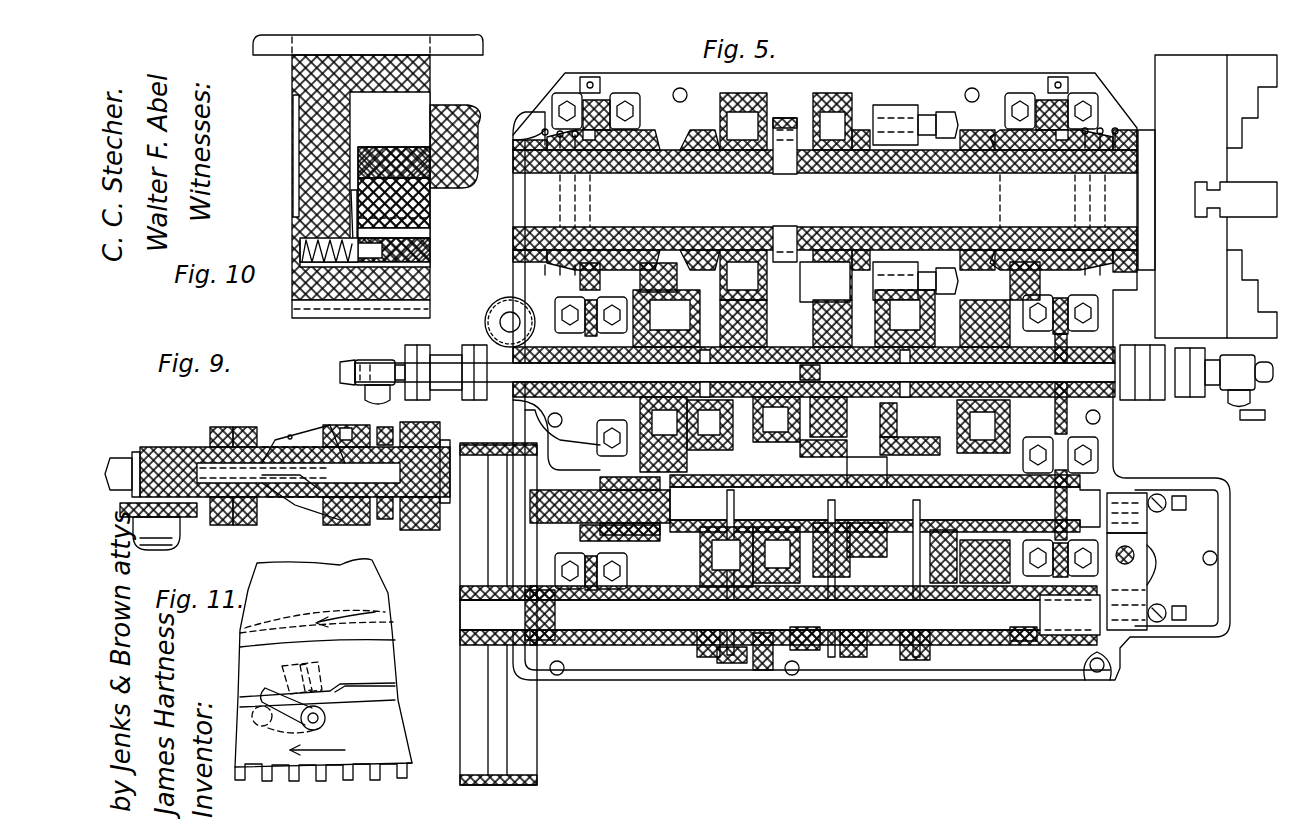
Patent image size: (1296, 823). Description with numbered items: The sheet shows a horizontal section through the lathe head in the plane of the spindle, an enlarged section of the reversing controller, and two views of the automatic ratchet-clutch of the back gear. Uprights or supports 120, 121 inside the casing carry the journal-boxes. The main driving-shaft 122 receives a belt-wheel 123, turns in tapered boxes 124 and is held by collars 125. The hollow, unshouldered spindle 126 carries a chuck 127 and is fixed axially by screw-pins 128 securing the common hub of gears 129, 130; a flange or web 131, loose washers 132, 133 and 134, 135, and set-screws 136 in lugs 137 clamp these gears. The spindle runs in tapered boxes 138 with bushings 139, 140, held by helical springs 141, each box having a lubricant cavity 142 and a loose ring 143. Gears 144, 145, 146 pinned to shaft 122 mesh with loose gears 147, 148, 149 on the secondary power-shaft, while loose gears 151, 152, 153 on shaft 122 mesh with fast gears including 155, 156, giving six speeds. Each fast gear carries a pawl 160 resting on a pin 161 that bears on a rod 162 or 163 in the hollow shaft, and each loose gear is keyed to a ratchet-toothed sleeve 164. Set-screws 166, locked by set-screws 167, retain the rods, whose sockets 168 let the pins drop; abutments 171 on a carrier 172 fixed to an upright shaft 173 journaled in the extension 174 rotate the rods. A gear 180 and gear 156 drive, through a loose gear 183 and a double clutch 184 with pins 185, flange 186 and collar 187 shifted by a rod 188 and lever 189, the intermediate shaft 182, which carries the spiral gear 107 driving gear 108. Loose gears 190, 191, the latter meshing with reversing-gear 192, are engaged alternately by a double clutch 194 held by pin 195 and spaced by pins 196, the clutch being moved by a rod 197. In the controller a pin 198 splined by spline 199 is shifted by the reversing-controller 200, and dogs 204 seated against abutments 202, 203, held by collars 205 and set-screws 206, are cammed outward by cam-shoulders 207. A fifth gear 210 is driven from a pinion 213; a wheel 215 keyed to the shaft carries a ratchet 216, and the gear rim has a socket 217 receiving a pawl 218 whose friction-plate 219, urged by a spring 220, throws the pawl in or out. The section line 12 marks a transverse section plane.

In FIG. 5, the section line 12 is at (920, 483).
In FIG. 5, the spiral gear 107 is at (492, 398).
In FIG. 5, the gear 108 is at (484, 320).
In FIG. 5, the upright or support 120 is at (588, 682).
In FIG. 5, the upright or support 121 is at (1070, 675).
In FIG. 5, the main driving-shaft 122 is at (470, 615).
In FIG. 5, the belt-wheel 123 is at (470, 735).
In FIG. 5, the boxes 124 is at (612, 645).
In FIG. 5, the collars 125 is at (838, 652).
In FIG. 5, the spindle 126 is at (898, 210).
In FIG. 5, the chuck 127 is at (1207, 196).
In FIG. 5, the screw-pins 128 is at (790, 160).
In FIG. 5, the gear 129 is at (770, 90).
In FIG. 5, the gear 130 is at (850, 90).
In FIG. 5, the flange or web 131 is at (688, 158).
In FIG. 5, the loose washer 132 is at (700, 158).
In FIG. 5, the loose washer 133 is at (705, 170).
In FIG. 5, the loose washer 134 is at (860, 160).
In FIG. 5, the loose washer 135 is at (880, 183).
In FIG. 5, the set-screws 136 is at (941, 200).
In FIG. 5, the ears or lugs 137 is at (880, 125).
In FIG. 5, the boxes 138 is at (600, 133).
In FIG. 5, the bushing 139 is at (635, 140).
In FIG. 5, the bushing 140 is at (512, 135).
In FIG. 5, the helical springs 141 is at (545, 128).
In FIG. 5, the cavity 142 is at (598, 98).
In FIG. 5, the loose ring 143 is at (605, 128).
In FIG. 5, the gear 144 is at (710, 660).
In FIG. 5, the gear 145 is at (805, 665).
In FIG. 5, the gear 146 is at (940, 647).
In FIG. 5, the gear 147 is at (701, 557).
In FIG. 5, the gear 148 is at (824, 446).
In FIG. 5, the gear 149 is at (900, 554).
In FIG. 5, the gear 151 is at (765, 670).
In FIG. 5, the gear 152 is at (855, 660).
In FIG. 5, the gear 153 is at (880, 660).
In FIG. 5, the gear 155 is at (820, 553).
In FIG. 5, the gear 156 is at (958, 560).
In FIG. 5, the loose pawl 160 is at (800, 481).
In FIG. 5, the pin 161 is at (802, 573).
In FIG. 5, the rod 162 is at (1003, 635).
In FIG. 5, the rod 163 is at (1125, 490).
In FIG. 5, the sleeve or bushing 164 is at (735, 718).
In FIG. 5, the set-screws 166 is at (1200, 655).
In FIG. 5, the set-screws 167 is at (1165, 495).
In FIG. 5, the recesses or sockets 168 is at (780, 570).
In FIG. 5, the abutment 171 is at (1150, 505).
In FIG. 5, the carrier 172 is at (1150, 578).
In FIG. 5, the upright shaft 173 is at (1135, 555).
In FIG. 5, the extension 174 is at (1232, 590).
In FIG. 5, the gear 180 is at (985, 561).
In FIG. 10, the intermediate shaft 182 is at (270, 58).
In FIG. 9, the intermediate shaft 182 is at (400, 546).
In FIG. 5, the intermediate shaft 182 is at (541, 435).
In FIG. 5, the loose gear 183 is at (910, 314).
In FIG. 5, the double clutch 184 is at (945, 315).
In FIG. 5, the pins 185 is at (880, 370).
In FIG. 5, the flange 186 is at (825, 370).
In FIG. 5, the collar 187 is at (1003, 304).
In FIG. 5, the rod 188 is at (1080, 365).
In FIG. 5, the lever 189 is at (1196, 390).
In FIG. 5, the gear 190 is at (676, 318).
In FIG. 5, the gear 191 is at (810, 282).
In FIG. 5, the reversing-gear 192 is at (735, 372).
In FIG. 5, the double clutch 194 is at (790, 302).
In FIG. 5, the pin 195 is at (745, 365).
In FIG. 5, the pins 196 is at (705, 365).
In FIG. 9, the rod 197 is at (438, 528).
In FIG. 5, the rod 197 is at (428, 546).
In FIG. 9, the pin 198 is at (190, 450).
In FIG. 9, the spline 199 is at (205, 500).
In FIG. 9, the reversing-controller 200 is at (130, 540).
In FIG. 5, the reversing-controller 200 is at (360, 360).
In FIG. 9, the abutment 202 is at (296, 451).
In FIG. 9, the abutment 203 is at (343, 465).
In FIG. 9, the dogs 204 is at (312, 438).
In FIG. 9, the collars 205 is at (221, 428).
In FIG. 9, the set-screws 206 is at (245, 428).
In FIG. 9, the cam-shoulders 207 is at (280, 500).
In FIG. 10, the gear 210 is at (305, 170).
In FIG. 11, the gear 210 is at (380, 702).
In FIG. 5, the gear 210 is at (628, 277).
In FIG. 5, the pinion 213 is at (620, 537).
In FIG. 10, the wheel 215 is at (440, 125).
In FIG. 11, the wheel 215 is at (323, 663).
In FIG. 5, the wheel 215 is at (677, 434).
In FIG. 10, the ratchet 216 is at (430, 208).
In FIG. 11, the ratchet 216 is at (390, 680).
In FIG. 5, the ratchet 216 is at (706, 427).
In FIG. 11, the socket 217 is at (328, 726).
In FIG. 10, the pawl 218 is at (430, 250).
In FIG. 11, the pawl 218 is at (323, 760).
In FIG. 10, the friction-plate 219 is at (350, 205).
In FIG. 11, the friction-plate 219 is at (322, 672).
In FIG. 10, the spring 220 is at (300, 250).